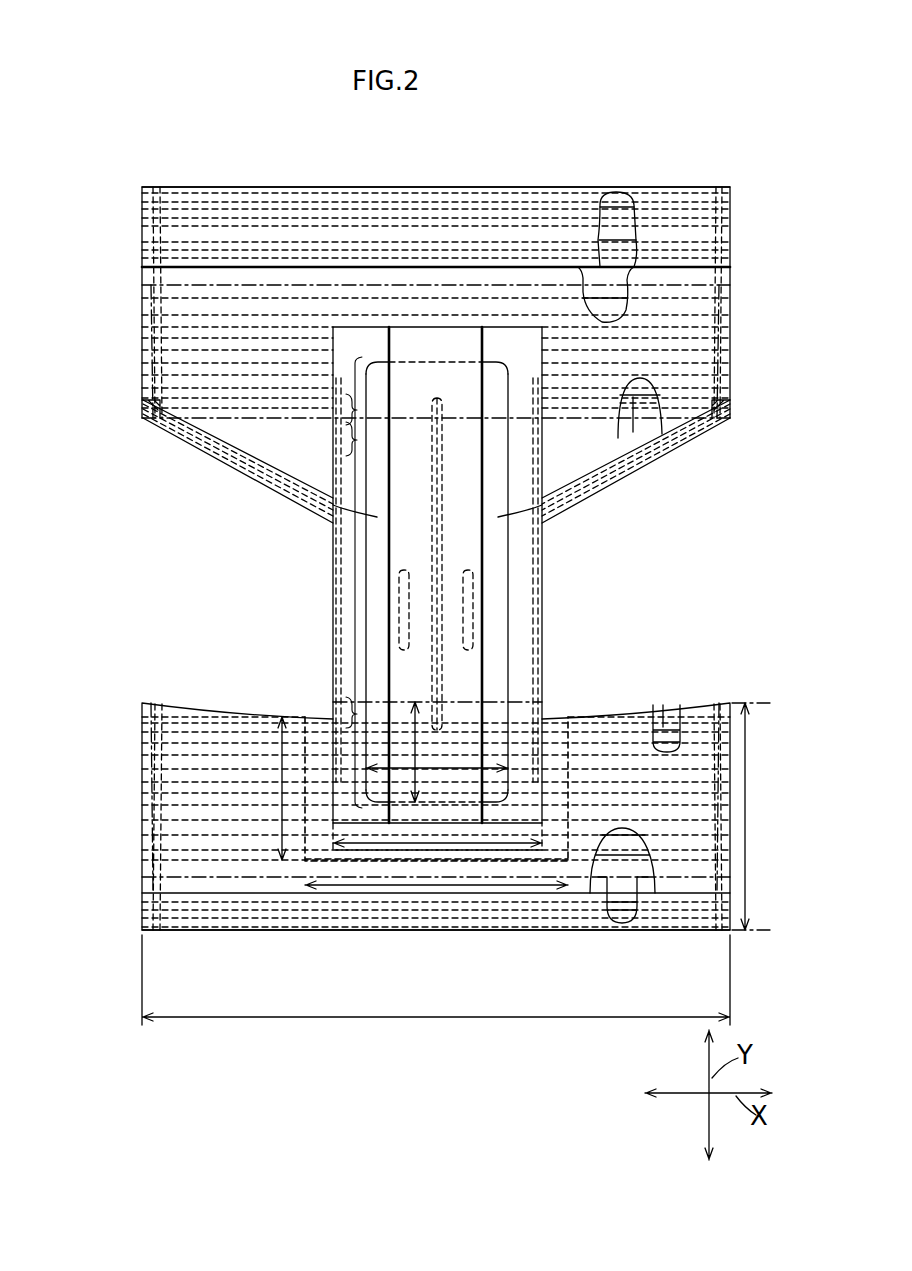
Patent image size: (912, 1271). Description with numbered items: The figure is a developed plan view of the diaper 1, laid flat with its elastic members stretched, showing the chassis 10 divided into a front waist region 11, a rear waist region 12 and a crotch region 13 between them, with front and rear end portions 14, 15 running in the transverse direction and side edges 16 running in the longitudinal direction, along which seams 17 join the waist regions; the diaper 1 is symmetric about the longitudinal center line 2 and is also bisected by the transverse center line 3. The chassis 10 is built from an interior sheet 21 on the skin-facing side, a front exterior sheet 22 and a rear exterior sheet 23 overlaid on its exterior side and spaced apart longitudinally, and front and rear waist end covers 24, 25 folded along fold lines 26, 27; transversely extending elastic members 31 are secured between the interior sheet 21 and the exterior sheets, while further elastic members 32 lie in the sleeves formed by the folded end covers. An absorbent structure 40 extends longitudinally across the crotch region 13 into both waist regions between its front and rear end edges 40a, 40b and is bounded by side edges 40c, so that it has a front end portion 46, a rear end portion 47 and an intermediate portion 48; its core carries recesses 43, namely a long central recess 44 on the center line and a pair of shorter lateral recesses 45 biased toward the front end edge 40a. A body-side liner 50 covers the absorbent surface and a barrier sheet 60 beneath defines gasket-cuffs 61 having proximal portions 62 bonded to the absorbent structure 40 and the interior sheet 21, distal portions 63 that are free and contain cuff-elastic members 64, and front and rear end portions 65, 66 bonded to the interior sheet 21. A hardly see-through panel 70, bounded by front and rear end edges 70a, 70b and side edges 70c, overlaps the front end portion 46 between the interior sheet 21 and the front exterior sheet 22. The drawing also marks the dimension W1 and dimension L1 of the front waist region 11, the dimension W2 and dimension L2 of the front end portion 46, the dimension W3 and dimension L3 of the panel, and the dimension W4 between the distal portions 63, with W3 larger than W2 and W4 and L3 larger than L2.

The diaper 1 is at (714, 155).
The longitudinal center line 2 is at (452, 1112).
The transverse center line 3 is at (772, 778).
The chassis 10 is at (654, 480).
The front waist region 11 is at (72, 703).
The rear waist region 12 is at (72, 187).
The crotch region 13 is at (72, 418).
The front end portion 14 is at (445, 932).
The rear end portion 15 is at (333, 187).
The side edges 16 is at (148, 233).
The side seal 17 is at (150, 298).
The interior sheet 21 is at (240, 434).
The front exterior sheet 22 is at (672, 704).
The rear exterior sheet 23 is at (665, 444).
The front waist end cover 24 is at (583, 915).
The rear waist end cover 25 is at (606, 212).
The fold line 26 is at (657, 932).
The fold line 27 is at (583, 232).
The elastic members 31 is at (620, 427).
The elastic members 32 is at (618, 206).
The absorbent structure 40 is at (410, 358).
The front end edge 40a is at (450, 805).
The rear end edge 40b is at (458, 362).
The side edges 40c is at (364, 467).
The recesses 43 is at (286, 658).
The central recess 44 is at (400, 575).
The lateral recesses 45 is at (435, 618).
The front end portion 46 is at (330, 713).
The rear end portion 47 is at (345, 402).
The intermediate portion 48 is at (345, 453).
The body-side liner 50 is at (438, 342).
The barrier sheet 60 is at (555, 652).
The gasket-cuffs 61 is at (262, 557).
The proximal portions 62 is at (335, 510).
The distal portions 63 is at (364, 547).
The cuff-elastic members 64 is at (333, 562).
The front end portion 65 is at (377, 825).
The rear end portion 66 is at (357, 327).
The hardly see-through panel 70 is at (355, 858).
The front end edge 70a is at (510, 863).
The rear end edge 70b is at (305, 715).
The side edges 70c is at (303, 828).
The dimension L1 is at (745, 866).
The dimension L2 is at (417, 743).
The dimension L3 is at (280, 752).
The dimension W1 is at (455, 1020).
The dimension W2 is at (430, 772).
The dimension W3 is at (372, 887).
The dimension W4 is at (418, 845).